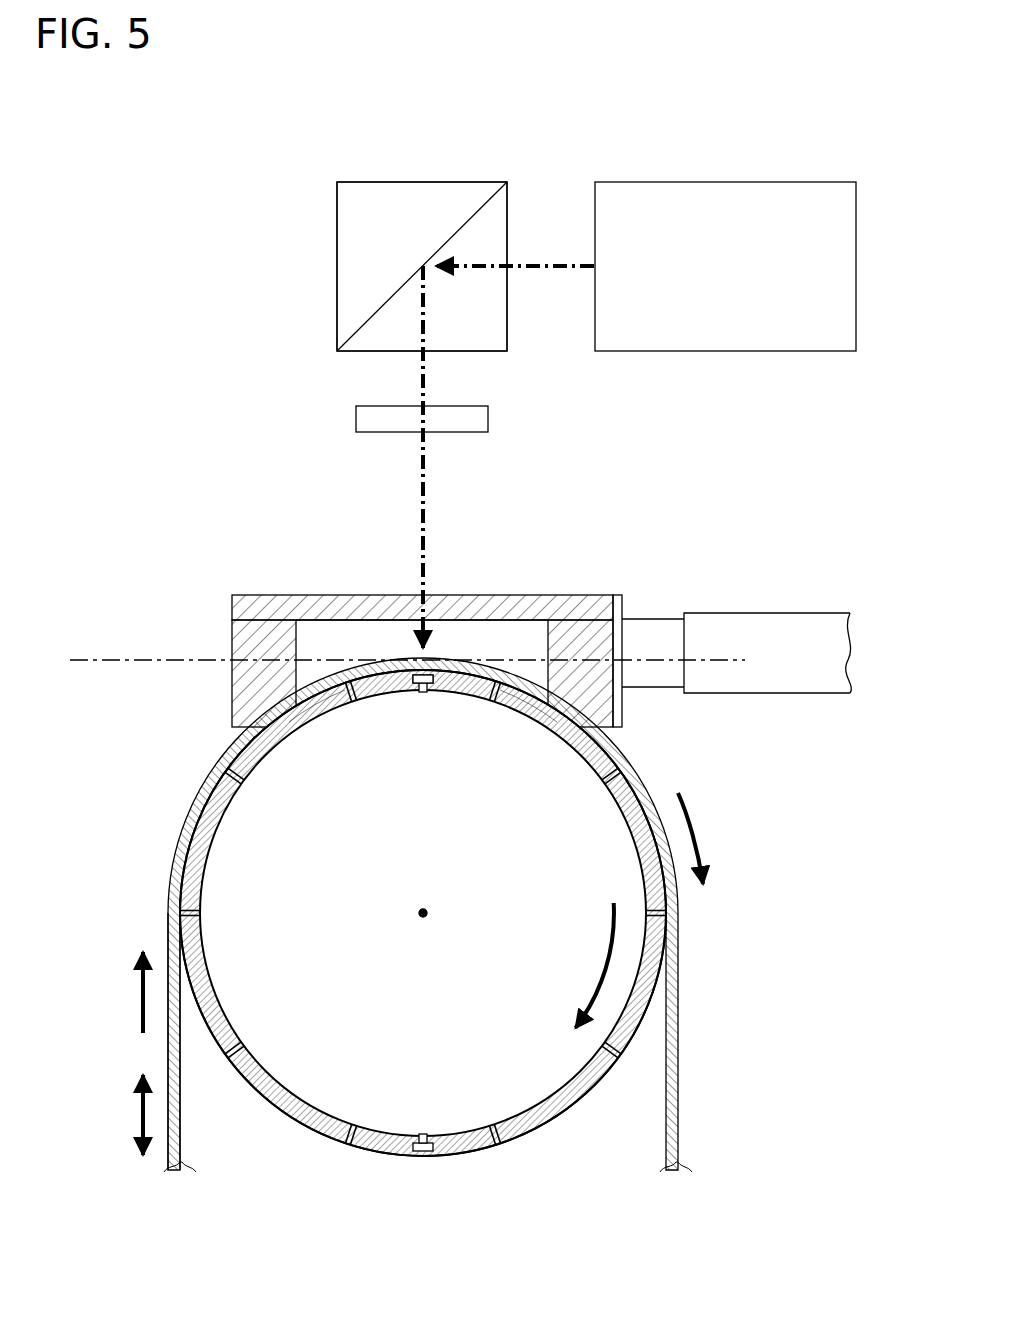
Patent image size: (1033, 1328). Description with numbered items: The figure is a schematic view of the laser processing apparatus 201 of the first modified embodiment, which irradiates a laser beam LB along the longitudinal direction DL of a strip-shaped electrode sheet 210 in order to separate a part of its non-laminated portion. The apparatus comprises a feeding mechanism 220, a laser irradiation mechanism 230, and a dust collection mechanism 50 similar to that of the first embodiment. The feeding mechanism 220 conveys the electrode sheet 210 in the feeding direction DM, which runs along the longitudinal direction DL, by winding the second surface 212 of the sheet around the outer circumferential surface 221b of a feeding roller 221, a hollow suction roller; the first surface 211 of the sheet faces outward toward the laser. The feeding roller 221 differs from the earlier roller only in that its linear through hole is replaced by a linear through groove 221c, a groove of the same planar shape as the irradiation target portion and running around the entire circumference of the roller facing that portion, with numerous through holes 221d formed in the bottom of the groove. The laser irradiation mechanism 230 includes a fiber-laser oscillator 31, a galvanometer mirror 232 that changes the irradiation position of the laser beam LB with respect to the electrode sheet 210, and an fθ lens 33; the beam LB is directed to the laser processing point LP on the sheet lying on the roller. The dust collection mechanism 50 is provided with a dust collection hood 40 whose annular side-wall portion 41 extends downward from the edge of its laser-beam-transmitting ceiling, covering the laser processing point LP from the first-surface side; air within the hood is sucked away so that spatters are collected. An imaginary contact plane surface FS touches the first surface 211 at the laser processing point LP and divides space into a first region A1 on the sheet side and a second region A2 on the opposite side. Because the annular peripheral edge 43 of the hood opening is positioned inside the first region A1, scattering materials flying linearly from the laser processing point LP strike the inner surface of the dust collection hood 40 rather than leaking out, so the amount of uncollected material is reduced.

The laser processing apparatus 201 is at (258, 322).
The laser irradiation mechanism 230 is at (623, 360).
The fiber-laser oscillator 31 is at (732, 280).
The galvanometer mirror 232 is at (337, 228).
The fθ lens 33 is at (356, 418).
The laser beam LB is at (556, 258).
The imaginary contact plane surface FS is at (94, 658).
The second region A2 is at (171, 623).
The first region A1 is at (171, 712).
The dust collection hood 40 is at (232, 632).
The side-wall portion 41 is at (274, 627).
The dust collection mechanism 50 is at (646, 606).
The electrode sheet 210 is at (182, 1140).
The first surface 211 is at (168, 1046).
The second surface 212 is at (182, 1062).
The feeding mechanism 220 is at (460, 1158).
The feeding roller 221 is at (315, 1133).
The peripheral edge 43 is at (290, 722).
The linear through groove 221c is at (419, 692).
The through holes 221d is at (429, 692).
The outer circumferential surface 221b is at (372, 1152).
The feeding direction DM is at (421, 913).
The longitudinal direction DL is at (124, 1115).
The laser processing point LP is at (432, 668).